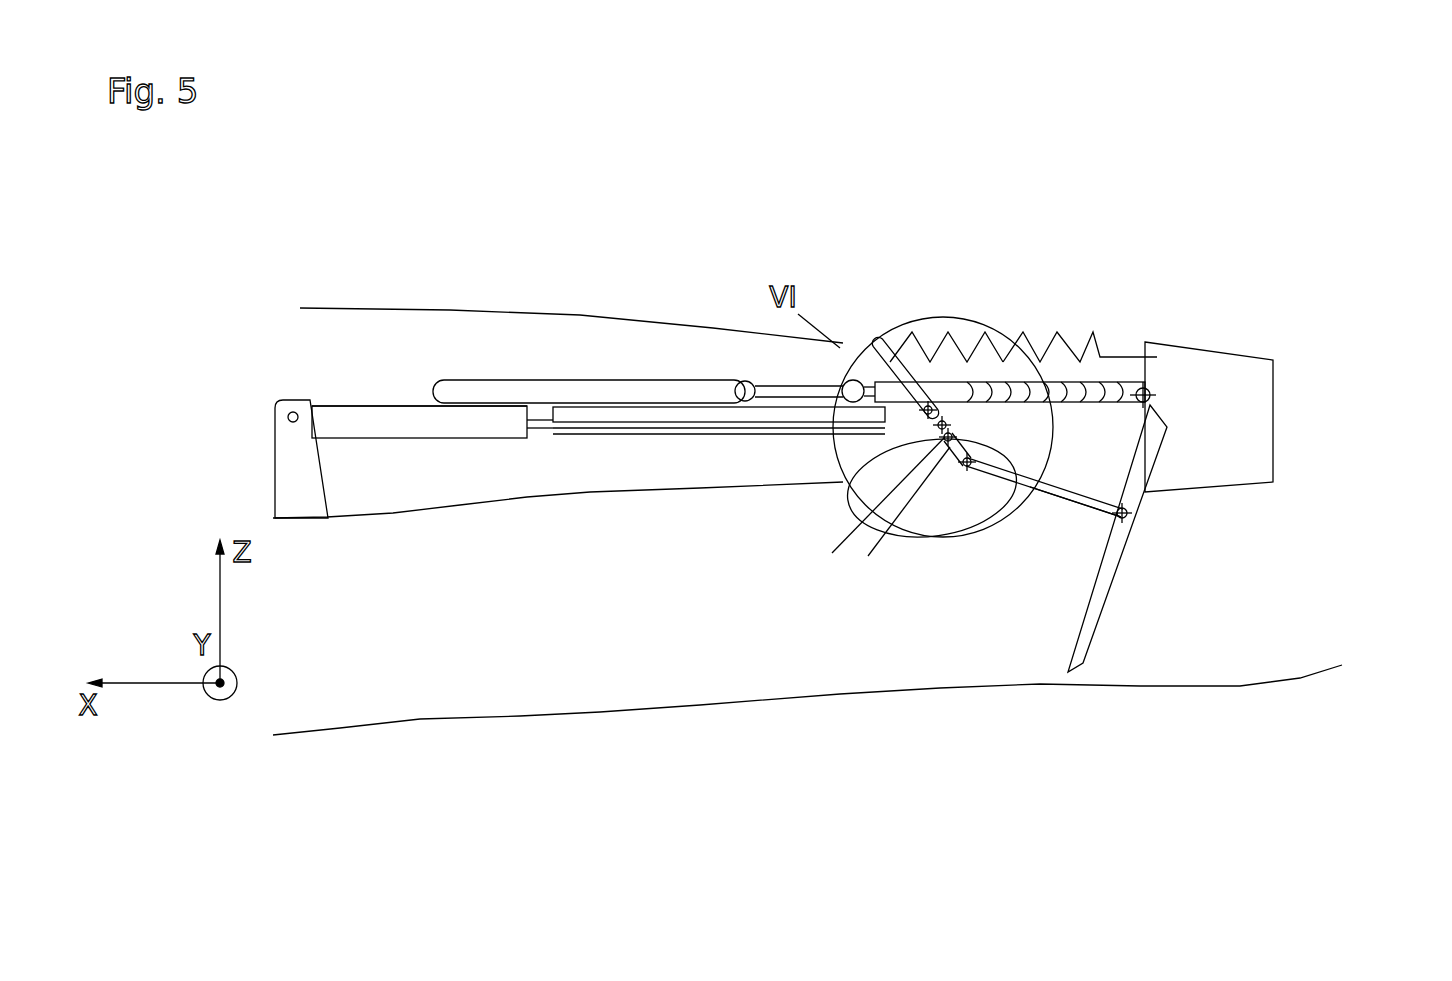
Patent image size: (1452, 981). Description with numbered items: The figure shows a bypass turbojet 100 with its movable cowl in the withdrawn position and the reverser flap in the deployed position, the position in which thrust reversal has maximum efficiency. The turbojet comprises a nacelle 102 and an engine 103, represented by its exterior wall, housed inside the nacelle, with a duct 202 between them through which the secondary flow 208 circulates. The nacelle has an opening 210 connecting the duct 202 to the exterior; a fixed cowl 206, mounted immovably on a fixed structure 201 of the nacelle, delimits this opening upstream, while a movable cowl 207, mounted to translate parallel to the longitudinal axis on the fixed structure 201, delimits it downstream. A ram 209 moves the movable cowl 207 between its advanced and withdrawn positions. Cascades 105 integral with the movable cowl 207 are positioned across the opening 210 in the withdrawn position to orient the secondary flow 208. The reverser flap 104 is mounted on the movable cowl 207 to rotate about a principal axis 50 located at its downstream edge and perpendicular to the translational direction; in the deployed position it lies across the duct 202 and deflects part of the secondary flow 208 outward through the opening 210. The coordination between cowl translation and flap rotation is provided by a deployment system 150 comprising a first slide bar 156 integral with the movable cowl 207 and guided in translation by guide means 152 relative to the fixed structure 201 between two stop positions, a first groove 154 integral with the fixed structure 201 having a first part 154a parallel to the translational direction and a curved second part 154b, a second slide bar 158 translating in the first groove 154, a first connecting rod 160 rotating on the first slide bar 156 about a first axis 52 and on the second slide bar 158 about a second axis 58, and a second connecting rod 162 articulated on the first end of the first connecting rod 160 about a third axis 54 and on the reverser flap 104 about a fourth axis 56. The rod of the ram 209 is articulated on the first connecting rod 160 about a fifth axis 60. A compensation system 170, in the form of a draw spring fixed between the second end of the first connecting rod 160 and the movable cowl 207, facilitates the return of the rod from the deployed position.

The bypass turbojet 100 is at (1295, 248).
The nacelle 102 is at (1114, 253).
The engine 103 is at (1195, 690).
The reverser flap 104 is at (1105, 590).
The cascades 105 is at (1053, 390).
The deployment system 150 is at (1303, 572).
The guide means 152 is at (555, 393).
The first groove 154 is at (583, 412).
The first part 154a is at (650, 413).
The second part 154b is at (878, 343).
The first slide bar 156 is at (745, 380).
The second slide bar 158 is at (935, 428).
The first connecting rod 160 is at (947, 537).
The second connecting rod 162 is at (1063, 500).
The compensation system 170 is at (987, 325).
The fixed structure 201 is at (297, 468).
The duct 202 is at (327, 677).
The fixed cowl 206 is at (358, 323).
The movable cowl 207 is at (1250, 376).
The secondary flow 208 is at (574, 618).
The ram 209 is at (370, 422).
The opening 210 is at (887, 206).
The principal axis of rotation 50 is at (1155, 388).
The first axis of rotation 52 is at (962, 350).
The third axis of rotation 54 is at (955, 442).
The fourth axis of rotation 56 is at (1125, 516).
The second axis of rotation 58 is at (930, 430).
The fifth axis of rotation 60 is at (893, 490).